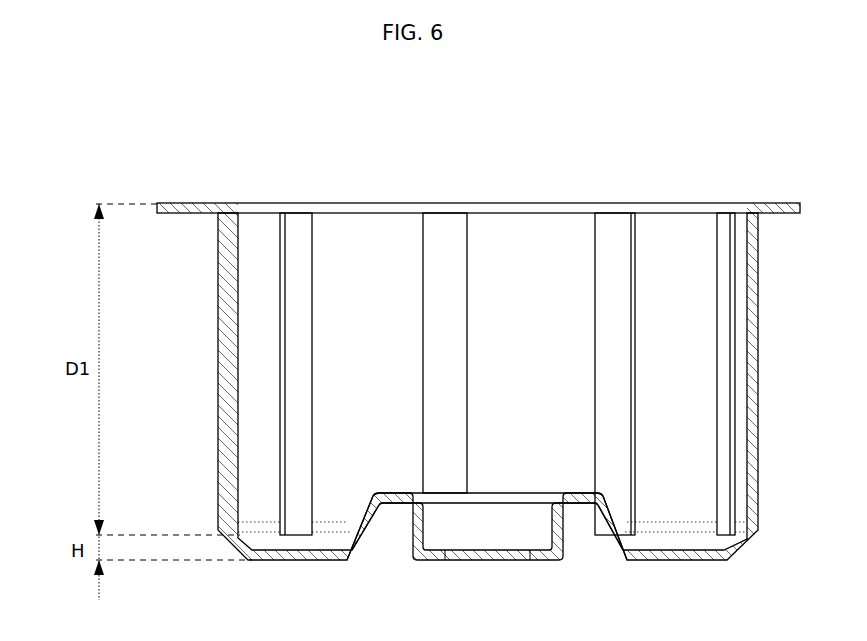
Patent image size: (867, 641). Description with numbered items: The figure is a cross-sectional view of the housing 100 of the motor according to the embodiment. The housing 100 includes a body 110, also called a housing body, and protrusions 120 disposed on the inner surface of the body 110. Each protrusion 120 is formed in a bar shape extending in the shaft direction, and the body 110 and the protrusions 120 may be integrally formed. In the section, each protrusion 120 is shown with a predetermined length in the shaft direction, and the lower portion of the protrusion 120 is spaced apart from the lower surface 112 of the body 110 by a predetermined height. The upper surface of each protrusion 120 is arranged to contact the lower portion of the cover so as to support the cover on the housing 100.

The housing 100 is at (58, 118).
The body 110 is at (228, 279).
The lower surface 112 is at (322, 556).
The protrusion 120 is at (296, 218).